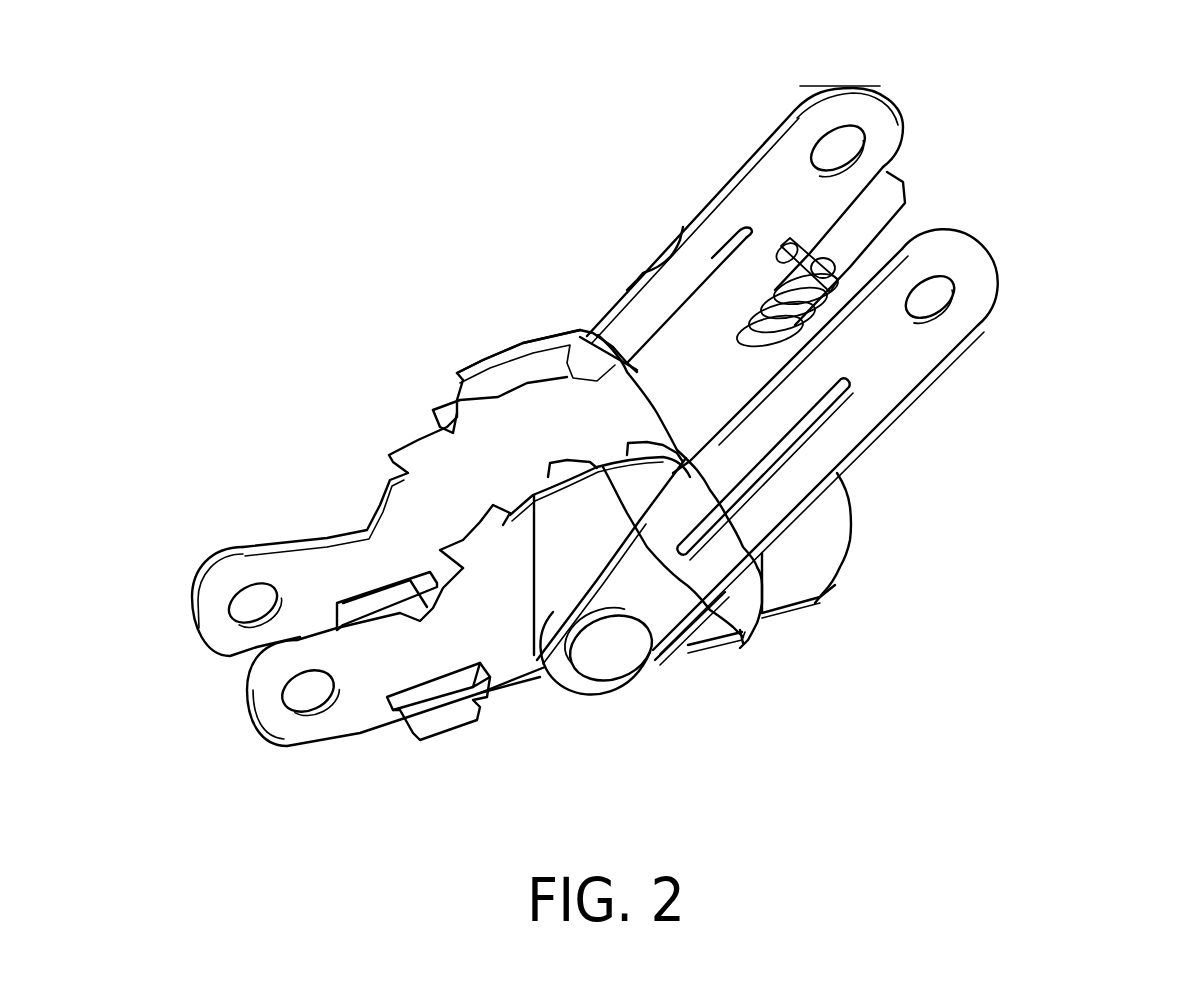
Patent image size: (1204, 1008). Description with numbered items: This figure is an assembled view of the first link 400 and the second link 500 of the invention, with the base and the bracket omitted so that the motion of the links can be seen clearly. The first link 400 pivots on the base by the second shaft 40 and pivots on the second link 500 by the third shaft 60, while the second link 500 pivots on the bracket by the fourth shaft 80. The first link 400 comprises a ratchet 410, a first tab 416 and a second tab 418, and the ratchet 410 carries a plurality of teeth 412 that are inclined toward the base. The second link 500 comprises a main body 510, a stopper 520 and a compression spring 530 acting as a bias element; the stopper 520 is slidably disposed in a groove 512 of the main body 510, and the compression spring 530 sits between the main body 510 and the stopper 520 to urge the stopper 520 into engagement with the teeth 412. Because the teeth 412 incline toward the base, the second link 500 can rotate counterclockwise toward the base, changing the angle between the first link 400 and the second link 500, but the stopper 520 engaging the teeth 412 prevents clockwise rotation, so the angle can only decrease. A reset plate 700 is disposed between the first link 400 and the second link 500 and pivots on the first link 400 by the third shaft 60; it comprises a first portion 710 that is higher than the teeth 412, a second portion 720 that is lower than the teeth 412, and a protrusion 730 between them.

The second shaft 40 is at (323, 677).
The third shaft 60 is at (607, 647).
The fourth shaft 80 is at (927, 288).
The first link 400 is at (357, 745).
The ratchet 410 is at (503, 587).
The teeth 412 is at (463, 530).
The first tab 416 is at (437, 707).
The second tab 418 is at (720, 647).
The second link 500 is at (818, 82).
The main body 510 is at (900, 353).
The groove 512 is at (840, 390).
The stopper 520 is at (697, 348).
The compression spring 530 is at (797, 306).
The reset plate 700 is at (1028, 560).
The first portion 710 is at (750, 642).
The second portion 720 is at (763, 567).
The protrusion 730 is at (763, 568).